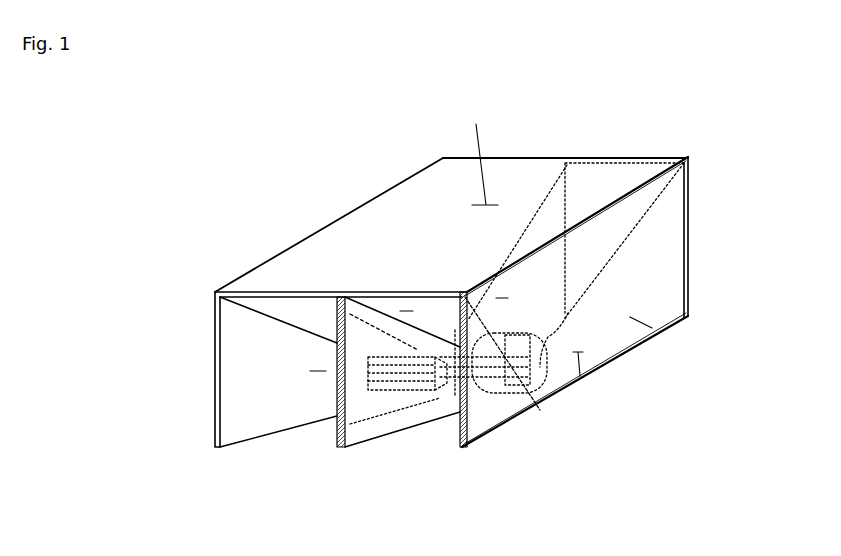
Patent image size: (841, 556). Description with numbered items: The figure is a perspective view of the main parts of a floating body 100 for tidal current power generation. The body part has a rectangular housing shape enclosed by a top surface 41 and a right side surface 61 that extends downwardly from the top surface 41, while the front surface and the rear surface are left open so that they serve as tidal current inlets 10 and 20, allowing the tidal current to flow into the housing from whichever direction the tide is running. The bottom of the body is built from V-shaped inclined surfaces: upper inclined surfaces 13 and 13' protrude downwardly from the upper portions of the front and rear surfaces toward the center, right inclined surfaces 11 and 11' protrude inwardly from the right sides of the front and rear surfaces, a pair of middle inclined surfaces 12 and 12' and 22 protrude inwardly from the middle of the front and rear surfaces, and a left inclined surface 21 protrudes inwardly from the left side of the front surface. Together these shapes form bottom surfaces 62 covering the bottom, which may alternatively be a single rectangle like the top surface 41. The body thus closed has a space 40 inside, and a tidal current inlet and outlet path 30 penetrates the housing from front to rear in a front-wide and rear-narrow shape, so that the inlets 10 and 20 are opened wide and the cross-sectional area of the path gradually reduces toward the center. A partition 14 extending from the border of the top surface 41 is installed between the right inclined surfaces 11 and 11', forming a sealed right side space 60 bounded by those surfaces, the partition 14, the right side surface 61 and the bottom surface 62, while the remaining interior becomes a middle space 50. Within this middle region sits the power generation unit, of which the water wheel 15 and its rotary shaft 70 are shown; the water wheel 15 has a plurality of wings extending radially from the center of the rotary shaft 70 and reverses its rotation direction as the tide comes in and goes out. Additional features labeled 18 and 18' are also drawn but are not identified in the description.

The floating body 100 is at (416, 102).
The tidal current inlet 10 is at (414, 438).
The V-shaped right inclined surface 11 is at (446, 407).
The V-shaped right inclined surface 11' is at (728, 237).
The V-shaped middle inclined surface 12 is at (396, 451).
The V-shaped middle inclined surface 12' is at (517, 211).
The V-shaped upper inclined surface 13 is at (394, 300).
The V-shaped upper inclined surface 13' is at (624, 198).
The partition 14 is at (502, 295).
The water wheel 15 is at (568, 390).
The guide 18 is at (438, 312).
The guide portion 18' is at (527, 303).
The tidal current inlet 20 is at (287, 436).
The V-shaped left inclined surface 21 is at (233, 405).
The V-shaped middle inclined surface 22 is at (330, 423).
The tidal current inlet and outlet path 30 is at (318, 366).
The space 40 is at (479, 153).
The top surface 41 is at (407, 212).
The middle space 50 is at (436, 430).
The right side space 60 is at (580, 377).
The right side surface 61 is at (650, 325).
The bottom surface 62 is at (512, 423).
The rotary shaft 70 is at (445, 356).